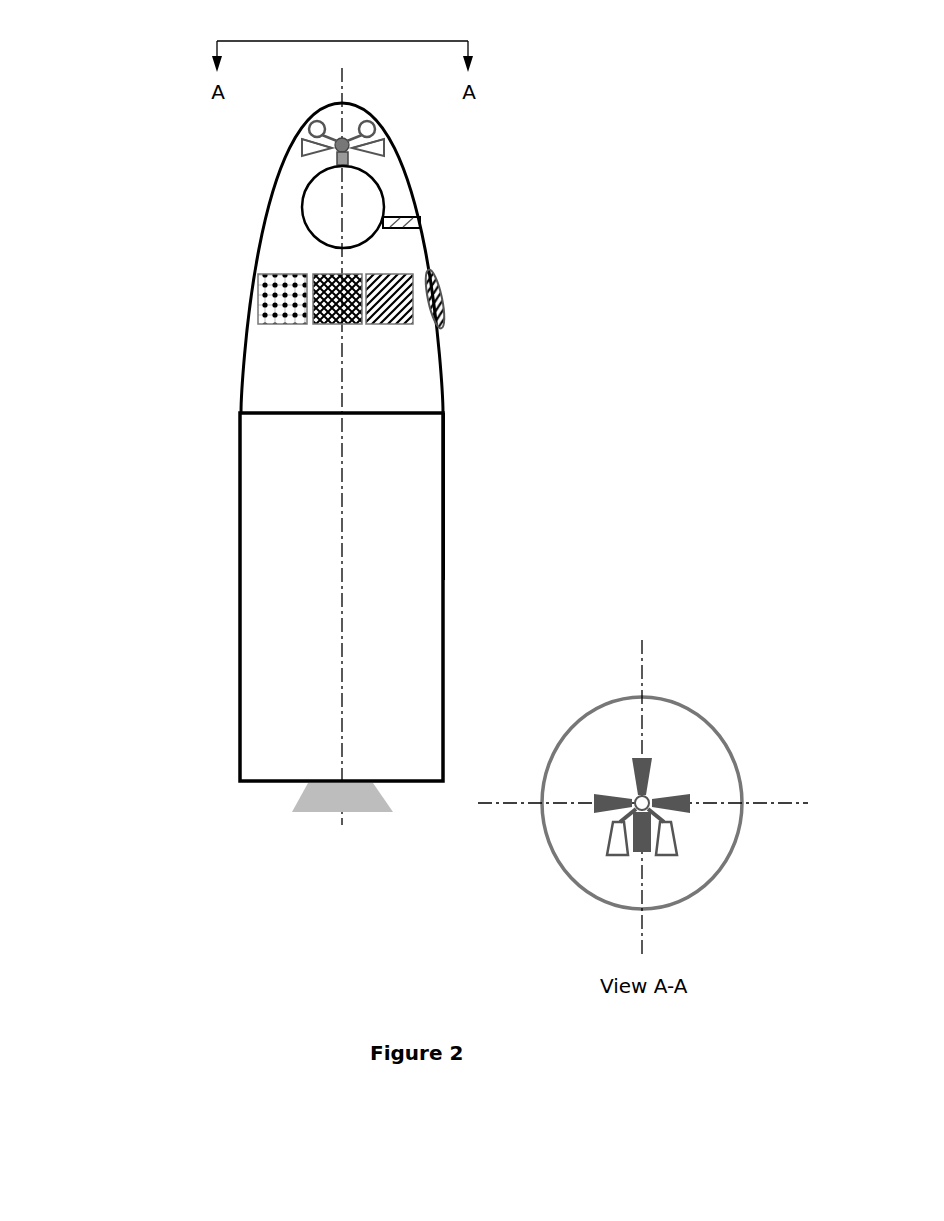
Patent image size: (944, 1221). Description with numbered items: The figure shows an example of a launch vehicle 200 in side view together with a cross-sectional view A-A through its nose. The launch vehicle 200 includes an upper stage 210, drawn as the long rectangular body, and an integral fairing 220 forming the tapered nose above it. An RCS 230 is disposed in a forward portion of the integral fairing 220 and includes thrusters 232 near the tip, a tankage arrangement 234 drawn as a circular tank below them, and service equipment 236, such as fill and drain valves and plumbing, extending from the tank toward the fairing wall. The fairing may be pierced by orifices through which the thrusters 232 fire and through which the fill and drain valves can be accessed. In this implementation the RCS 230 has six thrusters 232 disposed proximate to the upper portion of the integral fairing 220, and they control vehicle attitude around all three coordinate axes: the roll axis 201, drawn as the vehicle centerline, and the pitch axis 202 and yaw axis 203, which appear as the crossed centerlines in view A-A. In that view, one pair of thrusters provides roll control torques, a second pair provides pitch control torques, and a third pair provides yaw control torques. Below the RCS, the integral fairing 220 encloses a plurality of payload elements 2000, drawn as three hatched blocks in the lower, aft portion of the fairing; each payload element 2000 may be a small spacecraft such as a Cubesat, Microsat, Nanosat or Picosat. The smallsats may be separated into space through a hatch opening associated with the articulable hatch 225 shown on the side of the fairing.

The launch vehicle 200 is at (172, 62).
The roll axis 201 is at (342, 553).
The upper stage 210 is at (445, 527).
The integral fairing 220 is at (236, 372).
The articulable hatch 225 is at (447, 302).
The RCS 230 is at (407, 146).
The thrusters 232 is at (300, 150).
The tankage arrangement 234 is at (305, 200).
The service equipment 236 is at (420, 218).
The payload elements 2000 is at (378, 276).
The pitch axis 202 is at (642, 643).
The yaw axis 203 is at (770, 807).